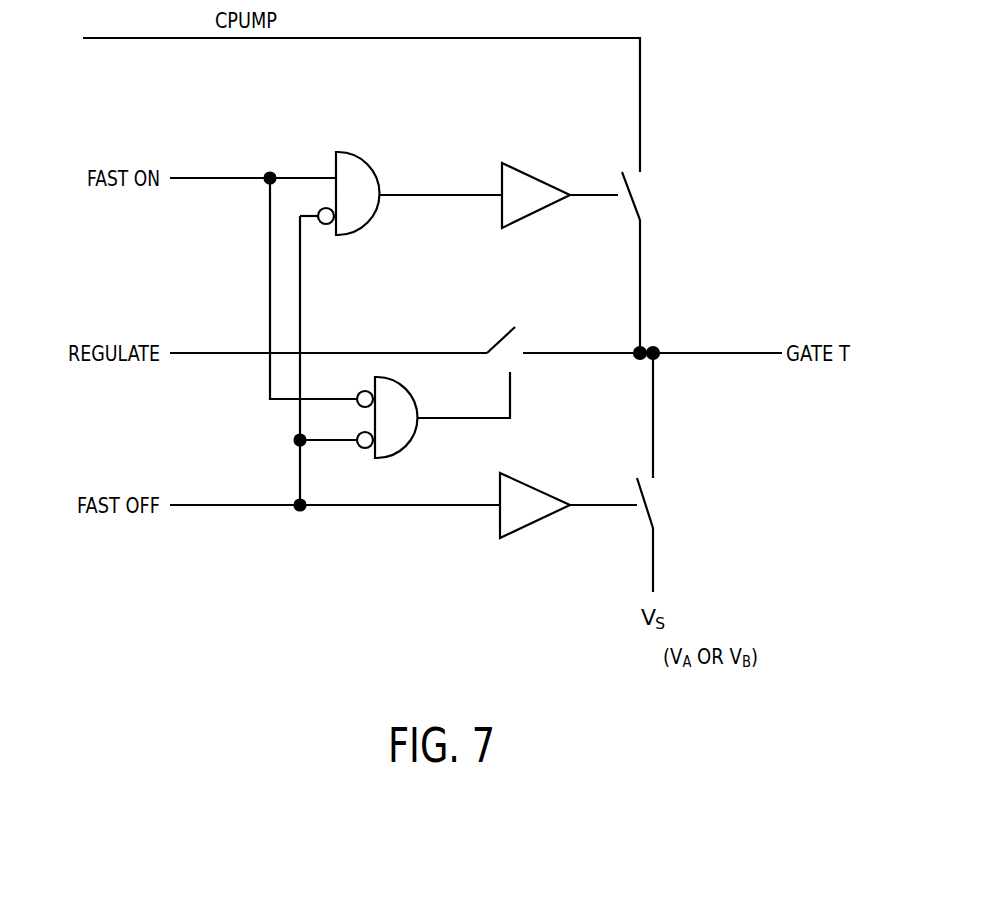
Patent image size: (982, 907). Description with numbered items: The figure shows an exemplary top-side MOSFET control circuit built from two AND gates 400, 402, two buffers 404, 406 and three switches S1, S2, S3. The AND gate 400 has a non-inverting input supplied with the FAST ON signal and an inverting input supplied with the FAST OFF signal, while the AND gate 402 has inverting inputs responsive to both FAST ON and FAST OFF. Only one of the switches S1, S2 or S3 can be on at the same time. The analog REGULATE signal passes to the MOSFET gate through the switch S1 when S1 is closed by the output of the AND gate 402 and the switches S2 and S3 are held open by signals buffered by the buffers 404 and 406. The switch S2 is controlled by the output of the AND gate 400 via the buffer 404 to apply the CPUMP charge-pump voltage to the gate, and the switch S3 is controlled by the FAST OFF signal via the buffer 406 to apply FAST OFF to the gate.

The AND gate 400 is at (368, 168).
The AND gate 402 is at (418, 398).
The buffer 404 is at (527, 172).
The buffer 406 is at (532, 528).
The switch S1 is at (526, 371).
The switch S2 is at (650, 193).
The switch S3 is at (665, 495).